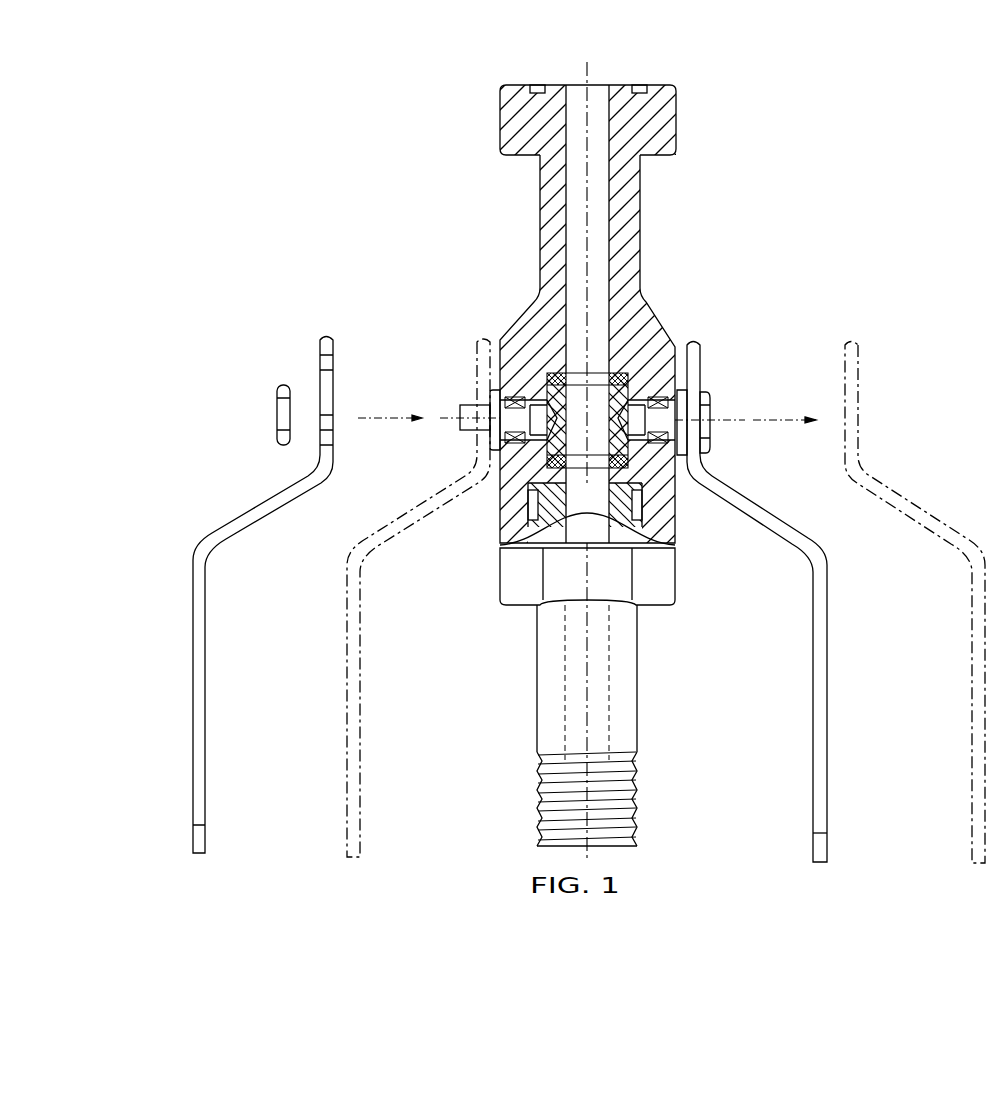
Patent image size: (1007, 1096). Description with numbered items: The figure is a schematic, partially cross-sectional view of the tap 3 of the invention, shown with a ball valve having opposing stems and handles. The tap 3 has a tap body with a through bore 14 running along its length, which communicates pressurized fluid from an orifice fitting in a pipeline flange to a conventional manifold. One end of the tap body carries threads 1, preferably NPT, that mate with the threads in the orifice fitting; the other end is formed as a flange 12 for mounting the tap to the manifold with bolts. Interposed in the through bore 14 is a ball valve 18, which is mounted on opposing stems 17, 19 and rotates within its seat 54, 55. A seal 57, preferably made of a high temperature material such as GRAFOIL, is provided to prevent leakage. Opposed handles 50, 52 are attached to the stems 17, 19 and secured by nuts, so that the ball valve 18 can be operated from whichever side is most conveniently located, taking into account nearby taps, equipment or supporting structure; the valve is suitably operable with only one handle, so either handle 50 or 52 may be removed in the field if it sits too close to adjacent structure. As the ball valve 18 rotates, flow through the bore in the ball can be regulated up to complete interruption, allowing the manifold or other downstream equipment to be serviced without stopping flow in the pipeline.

The threads 1 is at (640, 768).
The tap 3 is at (692, 199).
The flange 12 is at (676, 100).
The through bore 14 is at (597, 648).
The stem 17 is at (702, 410).
The ball valve 18 is at (587, 420).
The stem 19 is at (492, 433).
The handle 50 is at (827, 690).
The handle 52 is at (193, 706).
The seat 54 is at (505, 497).
The seat 55 is at (648, 330).
The seal 57 is at (684, 492).